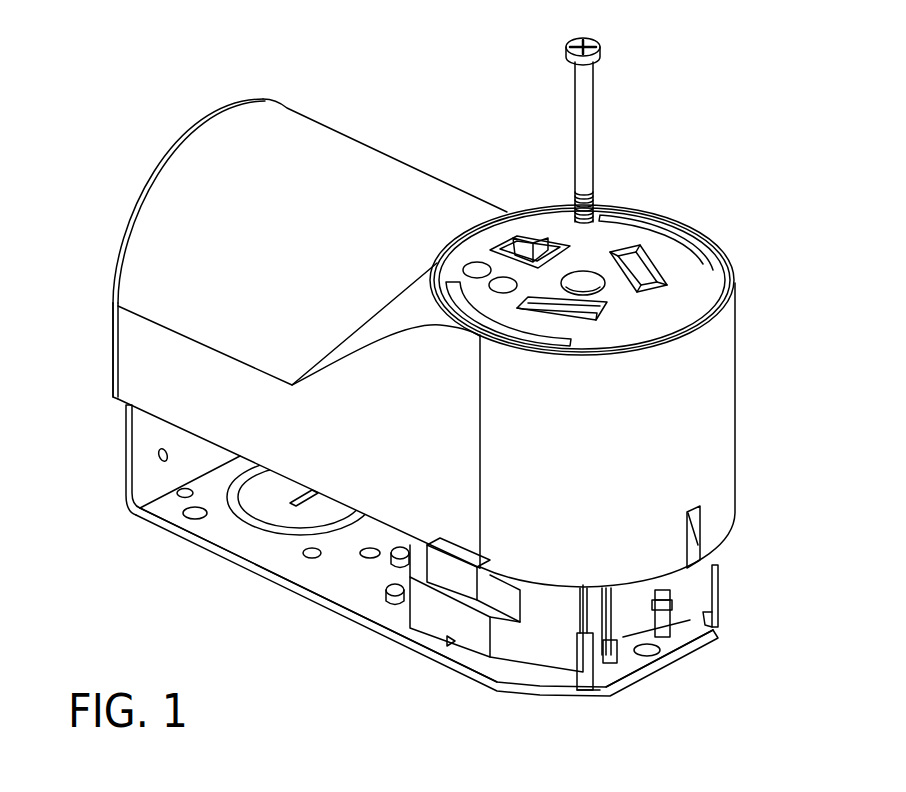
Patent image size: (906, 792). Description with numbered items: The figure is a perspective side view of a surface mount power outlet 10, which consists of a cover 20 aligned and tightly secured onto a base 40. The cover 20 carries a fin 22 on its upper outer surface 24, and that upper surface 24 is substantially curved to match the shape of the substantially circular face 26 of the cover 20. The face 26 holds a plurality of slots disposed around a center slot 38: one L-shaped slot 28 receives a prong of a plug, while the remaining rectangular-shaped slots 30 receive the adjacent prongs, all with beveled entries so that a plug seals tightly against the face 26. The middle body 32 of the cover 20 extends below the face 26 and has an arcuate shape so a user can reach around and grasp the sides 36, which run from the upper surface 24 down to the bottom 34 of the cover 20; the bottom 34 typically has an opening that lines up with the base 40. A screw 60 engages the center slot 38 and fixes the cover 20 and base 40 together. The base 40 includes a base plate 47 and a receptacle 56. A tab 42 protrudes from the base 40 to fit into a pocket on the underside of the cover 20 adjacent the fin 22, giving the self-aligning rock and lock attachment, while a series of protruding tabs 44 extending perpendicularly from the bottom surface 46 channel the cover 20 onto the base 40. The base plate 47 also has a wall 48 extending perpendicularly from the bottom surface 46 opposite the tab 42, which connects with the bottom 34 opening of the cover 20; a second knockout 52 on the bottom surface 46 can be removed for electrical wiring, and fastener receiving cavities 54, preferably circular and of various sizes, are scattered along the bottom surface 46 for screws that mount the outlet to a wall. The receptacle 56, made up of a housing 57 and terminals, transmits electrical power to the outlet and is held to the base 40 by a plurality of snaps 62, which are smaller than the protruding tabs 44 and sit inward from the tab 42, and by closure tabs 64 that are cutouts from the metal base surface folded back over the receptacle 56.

The surface mount power outlet 10 is at (411, 148).
The cover 20 is at (133, 196).
The fin 22 is at (701, 540).
The upper outer surface 24 is at (600, 446).
The face 26 is at (675, 316).
The L-shaped slot 28 is at (520, 238).
The rectangular-shaped slot 30 is at (633, 252).
The middle body 32 is at (255, 234).
The bottom 34 is at (114, 352).
The sides 36 is at (330, 456).
The center slot 38 is at (575, 283).
The base 40 is at (127, 520).
The tab 42 is at (660, 663).
The protruding tabs 44 is at (587, 668).
The bottom surface 46 is at (225, 493).
The base plate 47 is at (210, 557).
The wall 48 is at (130, 460).
The second knockout 52 is at (250, 504).
The fastener receiving cavities 54 is at (190, 518).
The receptacle 56 is at (532, 632).
The housing 57 is at (442, 626).
The screw 60 is at (580, 105).
The snaps 62 is at (611, 689).
The closure tabs 64 is at (396, 598).